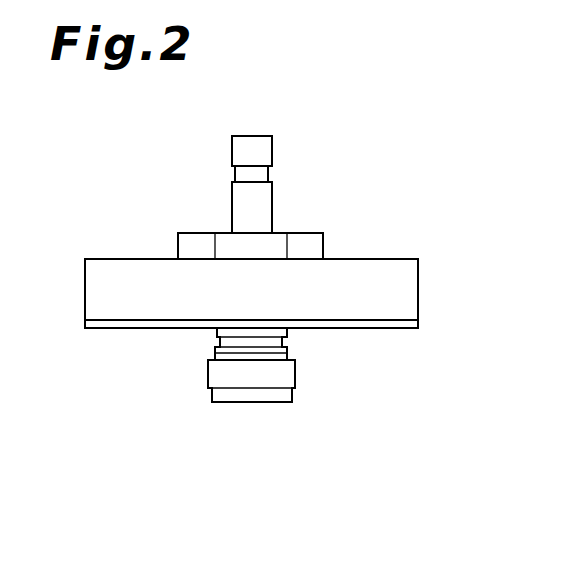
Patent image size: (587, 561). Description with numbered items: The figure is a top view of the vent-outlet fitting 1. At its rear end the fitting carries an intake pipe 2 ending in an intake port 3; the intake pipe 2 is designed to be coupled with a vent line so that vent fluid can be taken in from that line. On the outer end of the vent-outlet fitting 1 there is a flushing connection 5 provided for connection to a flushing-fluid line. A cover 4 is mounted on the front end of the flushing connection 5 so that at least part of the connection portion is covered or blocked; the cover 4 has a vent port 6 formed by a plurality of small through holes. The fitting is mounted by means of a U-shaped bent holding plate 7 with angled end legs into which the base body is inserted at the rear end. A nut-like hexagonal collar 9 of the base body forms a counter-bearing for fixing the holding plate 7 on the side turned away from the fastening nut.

The vent-outlet fitting 1 is at (388, 168).
The intake pipe 2 is at (247, 202).
The intake port 3 is at (252, 136).
The cover 4 is at (295, 380).
The flushing connection 5 is at (284, 350).
The vent port 6 is at (233, 405).
The holding plate 7 is at (418, 287).
The hexagonal collar 9 is at (313, 244).